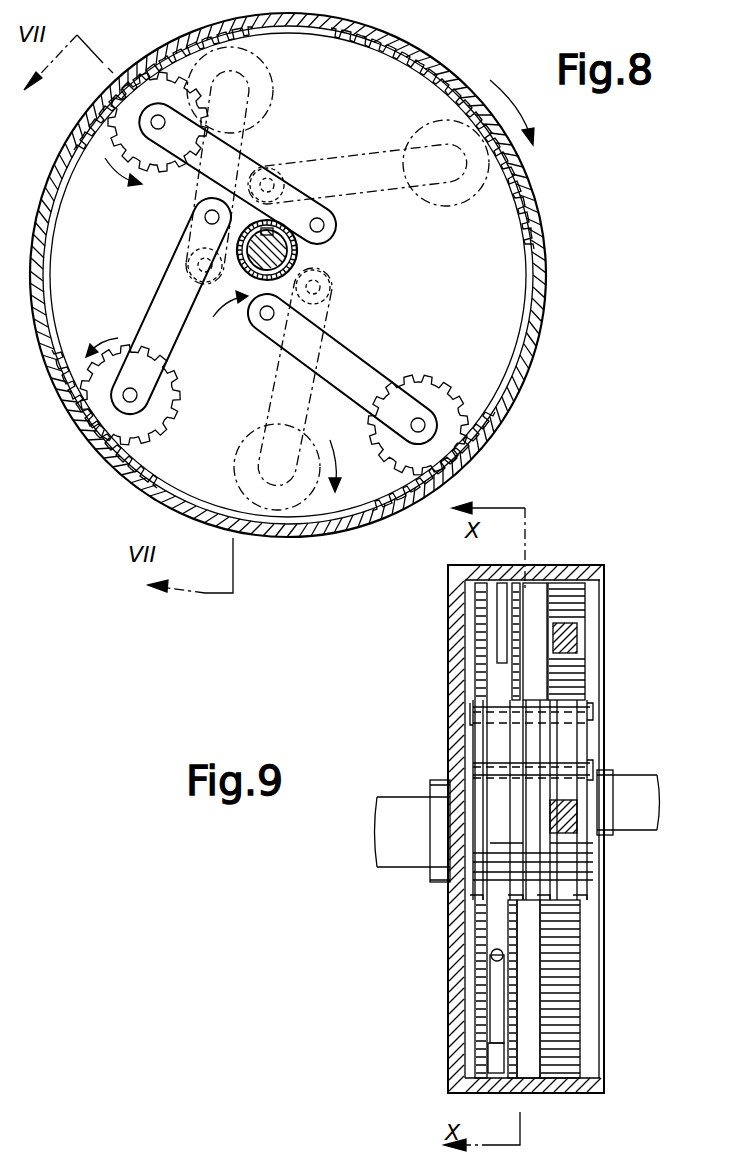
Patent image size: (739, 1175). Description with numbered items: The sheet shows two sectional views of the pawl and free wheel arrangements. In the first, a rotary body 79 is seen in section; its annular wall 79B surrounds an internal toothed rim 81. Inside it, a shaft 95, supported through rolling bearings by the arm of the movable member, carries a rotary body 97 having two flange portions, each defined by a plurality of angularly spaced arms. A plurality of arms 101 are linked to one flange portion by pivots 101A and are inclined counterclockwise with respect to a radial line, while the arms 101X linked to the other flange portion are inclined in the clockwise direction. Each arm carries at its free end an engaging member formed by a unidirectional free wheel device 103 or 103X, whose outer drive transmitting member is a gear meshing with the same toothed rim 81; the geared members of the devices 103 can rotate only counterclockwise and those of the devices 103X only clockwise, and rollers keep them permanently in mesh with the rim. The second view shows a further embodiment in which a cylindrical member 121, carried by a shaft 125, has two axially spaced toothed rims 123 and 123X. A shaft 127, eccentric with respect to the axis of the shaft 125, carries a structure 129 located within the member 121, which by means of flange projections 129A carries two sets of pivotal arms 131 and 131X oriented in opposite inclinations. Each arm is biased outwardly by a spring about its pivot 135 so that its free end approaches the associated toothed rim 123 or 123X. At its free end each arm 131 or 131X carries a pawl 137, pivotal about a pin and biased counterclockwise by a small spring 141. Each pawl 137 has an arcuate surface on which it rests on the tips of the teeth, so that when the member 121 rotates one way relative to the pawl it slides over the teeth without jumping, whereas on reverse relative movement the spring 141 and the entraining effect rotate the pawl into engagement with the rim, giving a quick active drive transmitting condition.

In FIG. 8, the rotary body 79 is at (308, 545).
In FIG. 8, the annular housing wall 79B is at (436, 58).
In FIG. 8, the toothed rim 81 is at (372, 52).
In FIG. 8, the shaft 95 is at (296, 256).
In FIG. 8, the rotary body 97 is at (244, 277).
In FIG. 8, the arms 101 is at (292, 150).
In FIG. 8, the pivots 101A is at (324, 226).
In FIG. 8, the arms 101X is at (344, 152).
In FIG. 8, the unidirectional free wheel device 103 is at (158, 178).
In FIG. 8, the unidirectional free wheel device 103X is at (474, 213).
In FIG. 9, the cylindrical member 121 is at (540, 568).
In FIG. 9, the toothed rim 123 is at (480, 1065).
In FIG. 9, the toothed rim 123X is at (578, 605).
In FIG. 9, the shaft 125 is at (405, 870).
In FIG. 9, the shaft 127 is at (640, 818).
In FIG. 9, the structure 129 is at (497, 868).
In FIG. 9, the flange projections 129A is at (480, 716).
In FIG. 9, the pivotal arms 131 is at (492, 690).
In FIG. 9, the pivotal arms 131X is at (575, 680).
In FIG. 9, the pivot 135 is at (497, 758).
In FIG. 9, the pawl 137 is at (502, 640).
In FIG. 9, the spring 141 is at (492, 1008).